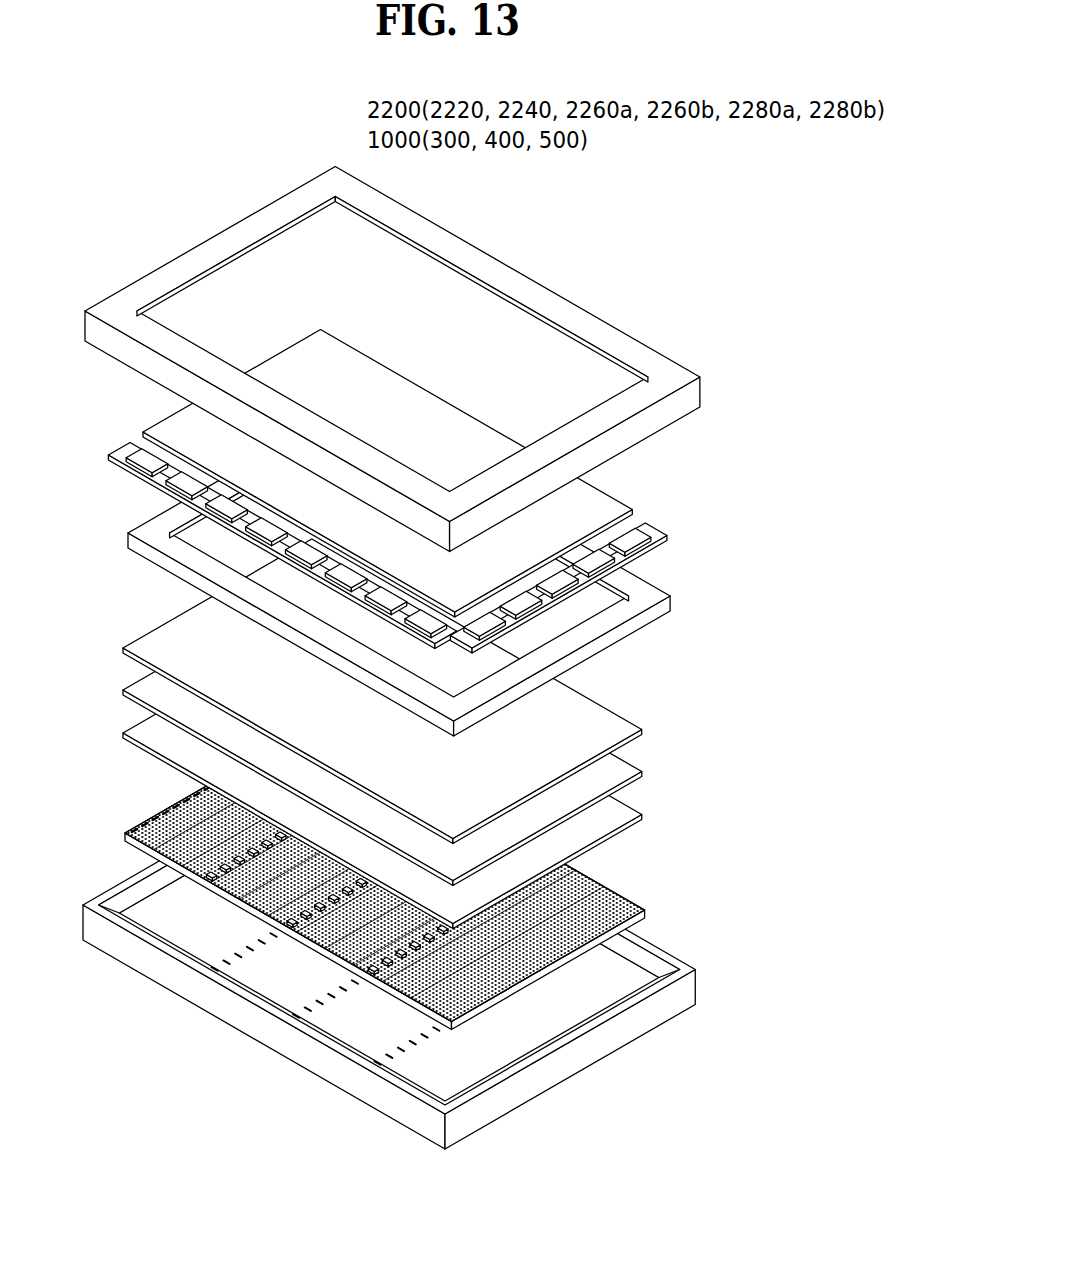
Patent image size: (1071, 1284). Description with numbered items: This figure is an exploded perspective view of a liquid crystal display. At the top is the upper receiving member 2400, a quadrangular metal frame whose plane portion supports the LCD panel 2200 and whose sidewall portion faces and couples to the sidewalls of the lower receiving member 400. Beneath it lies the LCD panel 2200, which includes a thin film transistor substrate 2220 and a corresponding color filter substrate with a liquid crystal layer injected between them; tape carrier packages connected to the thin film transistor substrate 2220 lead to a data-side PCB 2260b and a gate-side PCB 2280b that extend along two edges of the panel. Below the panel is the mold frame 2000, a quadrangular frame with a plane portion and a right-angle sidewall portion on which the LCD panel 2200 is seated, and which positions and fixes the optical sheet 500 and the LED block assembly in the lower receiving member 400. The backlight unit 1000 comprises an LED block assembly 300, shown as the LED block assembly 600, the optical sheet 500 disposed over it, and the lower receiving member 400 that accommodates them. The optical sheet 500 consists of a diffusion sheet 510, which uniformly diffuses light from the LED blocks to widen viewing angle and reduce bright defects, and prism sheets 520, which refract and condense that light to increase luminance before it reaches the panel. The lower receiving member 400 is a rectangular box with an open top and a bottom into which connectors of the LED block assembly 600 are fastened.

The upper receiving member 2400 is at (698, 392).
The LCD panel 2200 is at (403, 492).
The thin film transistor substrate 2220 is at (400, 474).
The data-side PCB 2260b is at (249, 545).
The gate-side PCB 2280b is at (608, 588).
The mold frame 2000 is at (668, 604).
The backlight unit 1000 is at (424, 844).
The light guide unit 300 is at (418, 876).
The optical sheet 500 is at (457, 734).
The prism sheet 520 is at (642, 768).
The diffusion sheet 510 is at (642, 813).
The LED block assembly 600 is at (418, 876).
The lower receiving member 400 is at (414, 955).